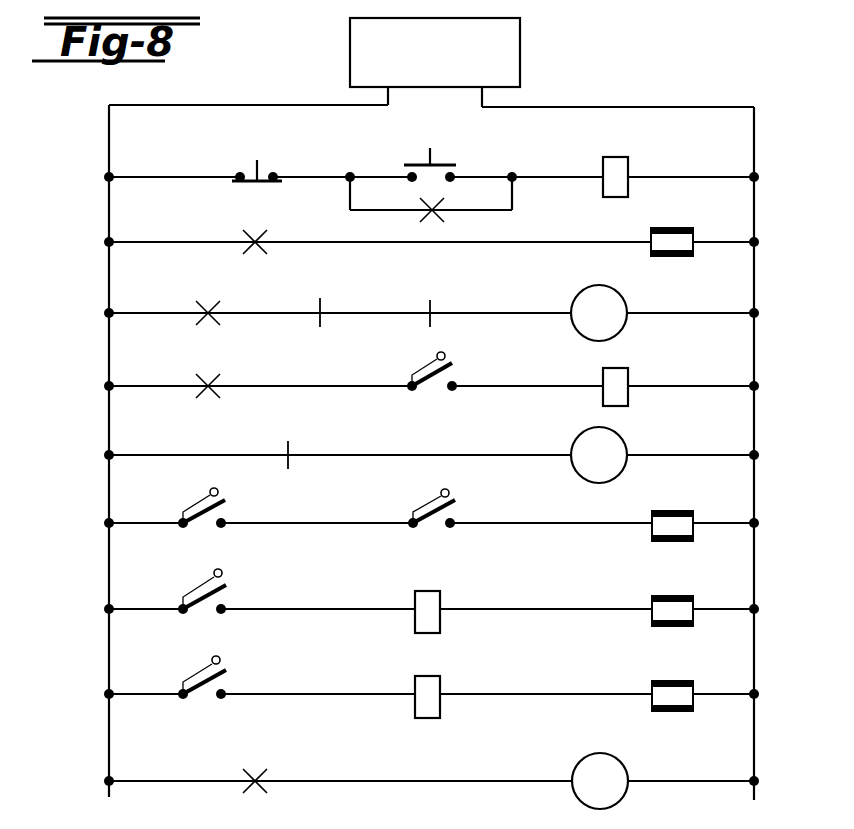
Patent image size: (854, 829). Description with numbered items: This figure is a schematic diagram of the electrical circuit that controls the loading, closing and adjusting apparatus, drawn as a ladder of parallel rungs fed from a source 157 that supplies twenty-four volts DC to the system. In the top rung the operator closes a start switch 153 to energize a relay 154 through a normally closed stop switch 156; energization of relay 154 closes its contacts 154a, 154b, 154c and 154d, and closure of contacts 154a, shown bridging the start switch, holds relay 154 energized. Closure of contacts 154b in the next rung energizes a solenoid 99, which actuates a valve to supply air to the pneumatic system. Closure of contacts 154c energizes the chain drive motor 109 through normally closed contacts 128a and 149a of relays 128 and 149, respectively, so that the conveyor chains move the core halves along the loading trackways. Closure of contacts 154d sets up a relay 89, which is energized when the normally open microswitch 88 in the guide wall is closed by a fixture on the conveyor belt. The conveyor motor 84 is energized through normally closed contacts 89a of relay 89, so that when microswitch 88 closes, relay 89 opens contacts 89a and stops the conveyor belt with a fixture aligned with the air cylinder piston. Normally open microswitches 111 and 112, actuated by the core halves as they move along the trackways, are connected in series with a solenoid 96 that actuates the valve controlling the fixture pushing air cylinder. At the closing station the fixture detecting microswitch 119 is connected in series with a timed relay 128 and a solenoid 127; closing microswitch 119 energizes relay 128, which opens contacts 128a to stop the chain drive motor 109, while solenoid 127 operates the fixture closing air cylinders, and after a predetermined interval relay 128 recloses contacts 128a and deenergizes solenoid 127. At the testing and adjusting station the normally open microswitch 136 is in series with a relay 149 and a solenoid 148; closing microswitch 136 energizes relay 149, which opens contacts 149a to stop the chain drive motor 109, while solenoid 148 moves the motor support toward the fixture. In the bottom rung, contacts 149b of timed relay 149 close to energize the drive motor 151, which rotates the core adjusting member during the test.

The source 157 is at (522, 57).
The stop switch 156 is at (268, 177).
The start switch 153 is at (450, 163).
The relay 154 is at (628, 166).
The contacts 154a is at (438, 214).
The contacts 154b is at (262, 250).
The contacts 154c is at (212, 307).
The contacts 154d is at (212, 380).
The solenoid 99 is at (693, 252).
The contacts 128a is at (321, 305).
The contacts 149a is at (431, 307).
The chain drive motor 109 is at (613, 334).
The microswitch 88 is at (424, 364).
The relay 89 is at (628, 376).
The contacts 89a is at (289, 462).
The motor 84 is at (625, 445).
The microswitch 111 is at (197, 500).
The microswitch 112 is at (427, 501).
The solenoid 96 is at (685, 511).
The fixture detecting microswitch 119 is at (190, 591).
The timed relay 128 is at (440, 598).
The solenoid 127 is at (685, 596).
The microswitch 136 is at (192, 676).
The relay 149 is at (440, 683).
The solenoid 148 is at (685, 681).
The contacts 149b is at (262, 775).
The drive motor 151 is at (620, 800).